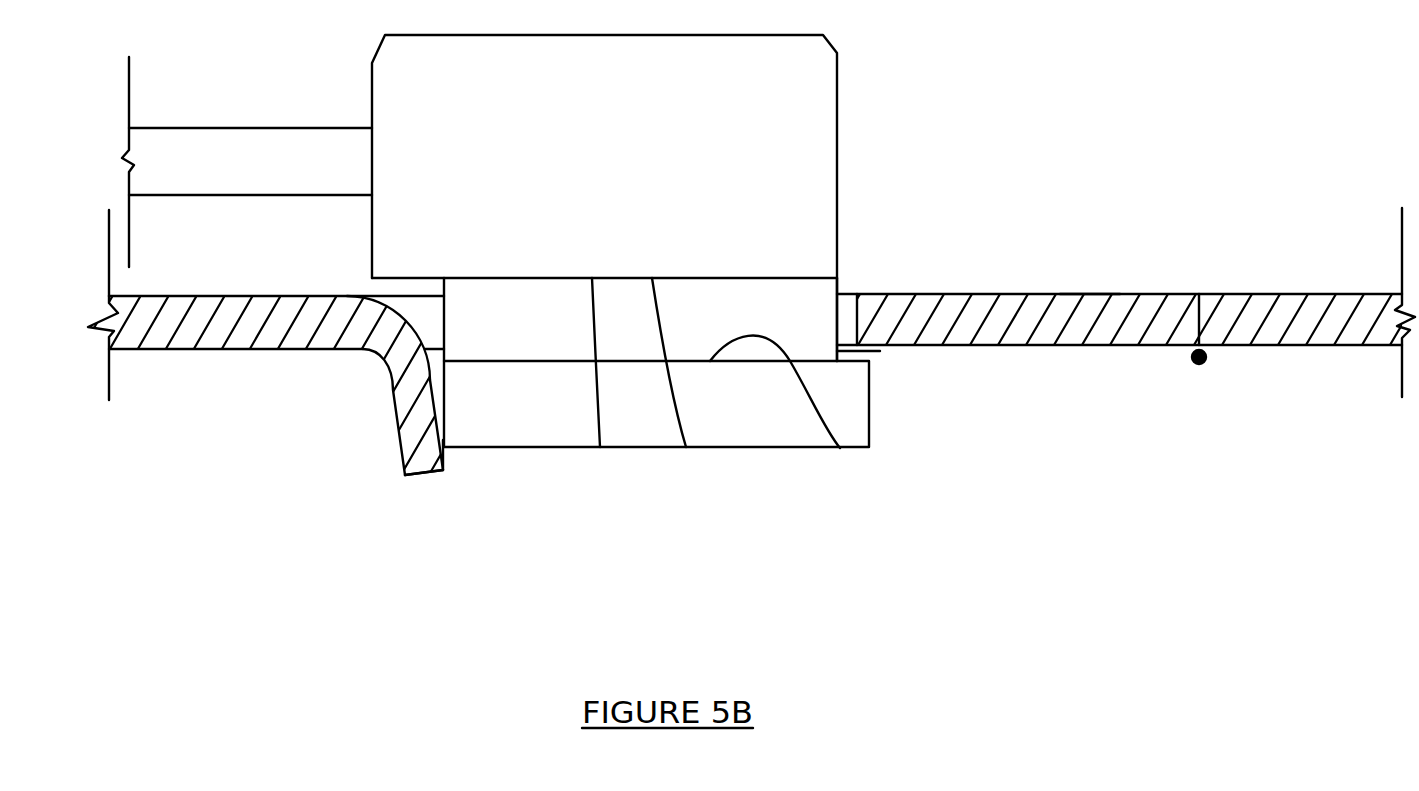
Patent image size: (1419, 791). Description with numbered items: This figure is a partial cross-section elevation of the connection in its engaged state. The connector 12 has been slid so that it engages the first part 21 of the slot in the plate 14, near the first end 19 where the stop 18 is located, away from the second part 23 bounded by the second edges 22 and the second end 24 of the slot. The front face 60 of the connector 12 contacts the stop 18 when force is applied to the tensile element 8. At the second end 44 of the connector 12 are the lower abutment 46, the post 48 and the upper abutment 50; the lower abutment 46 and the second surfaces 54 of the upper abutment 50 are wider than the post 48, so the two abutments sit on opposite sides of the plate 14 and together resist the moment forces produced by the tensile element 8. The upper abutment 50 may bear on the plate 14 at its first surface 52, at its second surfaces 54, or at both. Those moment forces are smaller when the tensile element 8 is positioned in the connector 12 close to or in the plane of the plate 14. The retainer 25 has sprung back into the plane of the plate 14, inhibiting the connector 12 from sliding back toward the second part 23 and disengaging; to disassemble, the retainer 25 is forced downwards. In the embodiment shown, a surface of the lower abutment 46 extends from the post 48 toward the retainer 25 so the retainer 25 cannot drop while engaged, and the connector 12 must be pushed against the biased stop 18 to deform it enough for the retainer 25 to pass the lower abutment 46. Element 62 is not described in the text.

The tensile element 8 is at (258, 150).
The connector 12 is at (803, 93).
The plate 14 is at (1124, 329).
The stop 18 is at (432, 473).
The first end 19 is at (466, 502).
The first part 21 is at (418, 310).
The second edges 22 is at (1087, 294).
The second part 23 is at (857, 300).
The second end 24 is at (1199, 364).
The retainer 25 is at (1058, 328).
The second end 44 is at (790, 447).
The lower abutment 46 is at (840, 448).
The post 48 is at (863, 350).
The upper abutment 50 is at (600, 447).
The first surface 52 is at (312, 349).
The second surfaces 54 is at (686, 447).
The front face 60 is at (408, 443).
The spring 62 is at (863, 352).